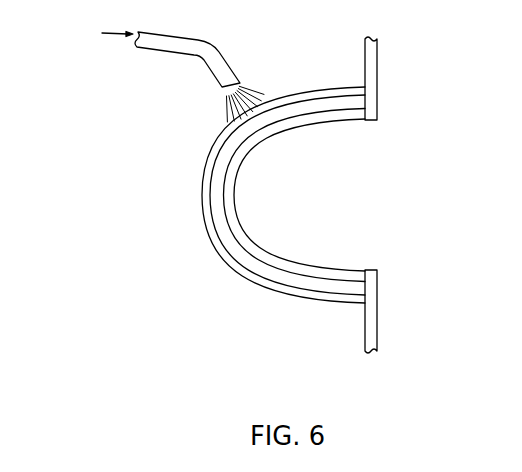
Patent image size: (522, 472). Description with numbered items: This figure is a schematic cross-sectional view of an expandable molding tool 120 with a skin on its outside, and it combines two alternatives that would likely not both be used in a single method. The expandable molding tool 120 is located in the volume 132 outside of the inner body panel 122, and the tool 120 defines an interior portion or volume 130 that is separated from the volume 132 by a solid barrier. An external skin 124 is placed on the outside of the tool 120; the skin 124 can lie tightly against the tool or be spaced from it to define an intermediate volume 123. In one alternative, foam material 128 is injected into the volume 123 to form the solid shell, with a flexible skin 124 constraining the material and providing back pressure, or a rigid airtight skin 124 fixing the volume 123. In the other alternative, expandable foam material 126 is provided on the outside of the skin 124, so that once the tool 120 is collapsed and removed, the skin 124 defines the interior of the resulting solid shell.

The expandable molding tool 120 is at (266, 204).
The inner body panel 122 is at (377, 58).
The intermediate volume 123 is at (229, 243).
The external skin 124 is at (288, 293).
The expandable foam material 126 is at (197, 39).
The foam material 128 is at (280, 270).
The interior portion or volume 130 is at (306, 200).
The volume outside of inner body panel 132 is at (145, 238).